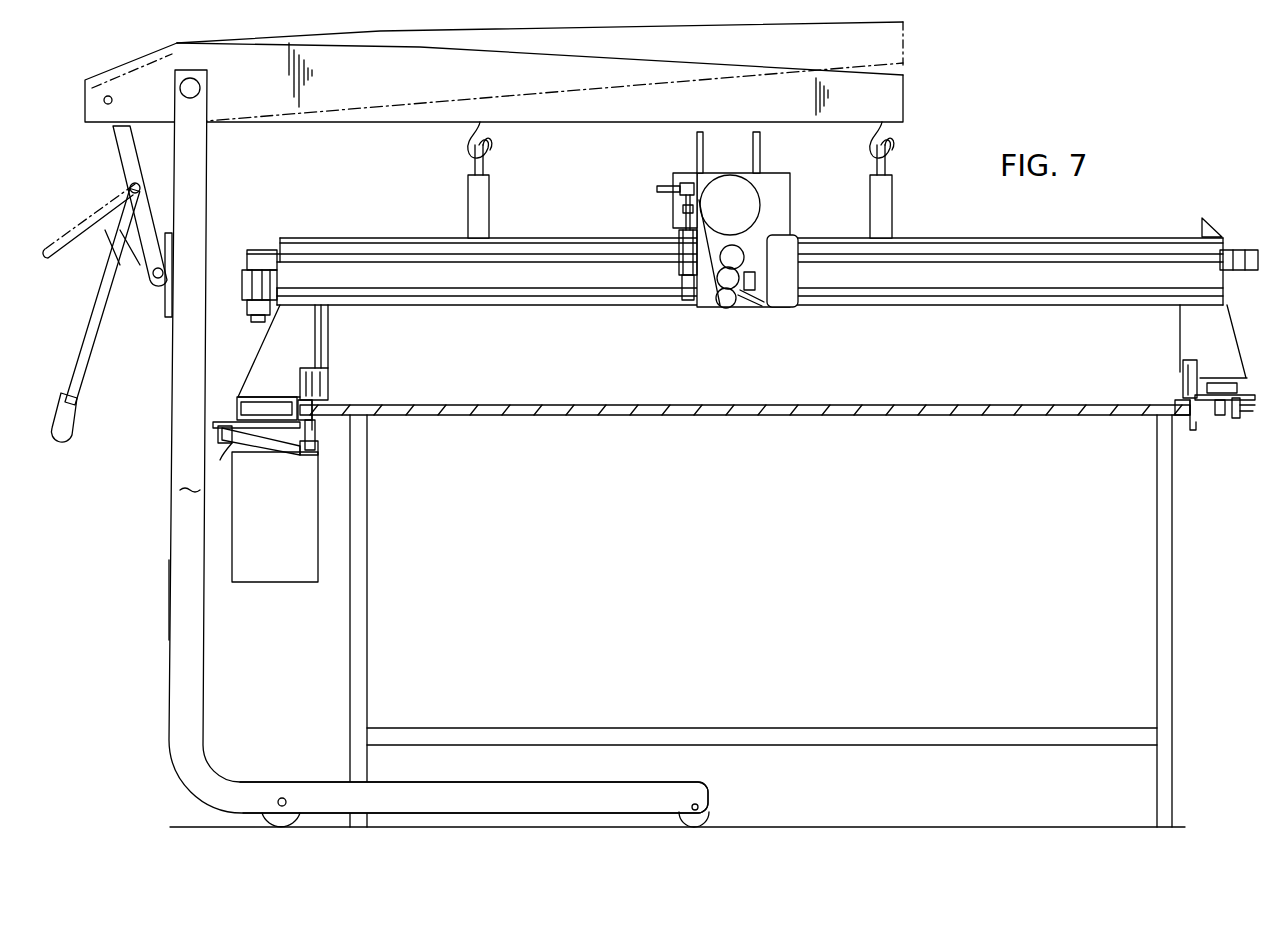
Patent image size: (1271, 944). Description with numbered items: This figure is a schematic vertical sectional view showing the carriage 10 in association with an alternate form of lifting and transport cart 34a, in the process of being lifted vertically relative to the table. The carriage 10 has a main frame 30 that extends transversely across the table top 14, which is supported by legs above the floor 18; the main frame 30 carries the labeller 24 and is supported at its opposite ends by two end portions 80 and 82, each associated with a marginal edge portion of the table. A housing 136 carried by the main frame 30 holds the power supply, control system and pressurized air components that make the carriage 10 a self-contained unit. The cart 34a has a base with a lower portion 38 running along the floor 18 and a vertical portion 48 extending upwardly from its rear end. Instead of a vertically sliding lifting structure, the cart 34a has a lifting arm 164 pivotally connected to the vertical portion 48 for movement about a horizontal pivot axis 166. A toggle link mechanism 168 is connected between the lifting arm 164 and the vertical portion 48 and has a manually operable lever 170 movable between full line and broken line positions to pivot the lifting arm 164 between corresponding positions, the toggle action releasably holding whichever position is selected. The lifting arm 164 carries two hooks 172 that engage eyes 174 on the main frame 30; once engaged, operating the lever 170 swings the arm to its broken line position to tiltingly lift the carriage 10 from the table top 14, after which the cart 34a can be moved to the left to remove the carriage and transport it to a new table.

The carriage 10 is at (919, 228).
The table top 14 is at (800, 408).
The floor 18 is at (837, 806).
The labeller 24 is at (806, 192).
The main frame 30 is at (1220, 280).
The lifting and transport cart 34a is at (169, 596).
The lower portion 38 is at (603, 781).
The vertical portion 48 is at (192, 636).
The end portion 80 is at (302, 340).
The end portion 82 is at (1185, 336).
The housing 136 is at (278, 566).
The lifting arm 164 is at (563, 25).
The horizontal pivot axis 166 is at (198, 92).
The toggle link mechanism 168 is at (150, 154).
The lever 170 is at (100, 215).
The hooks 172 is at (468, 140).
The eyes 174 is at (490, 169).